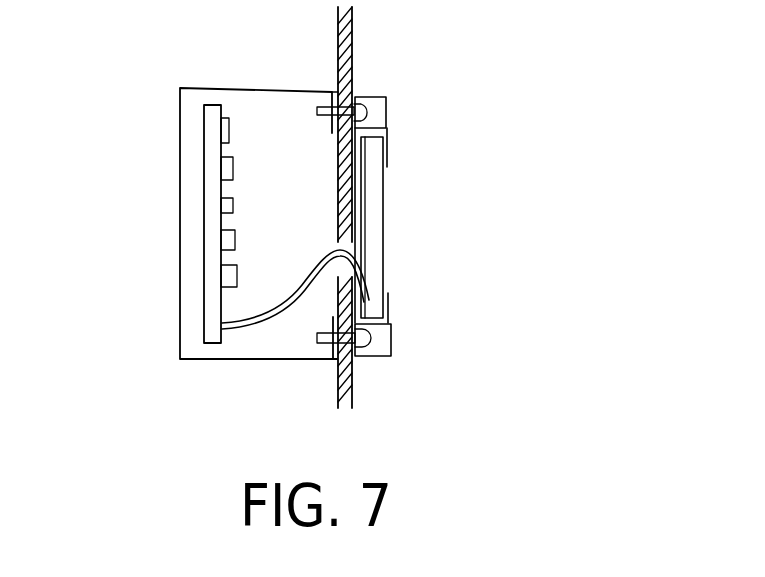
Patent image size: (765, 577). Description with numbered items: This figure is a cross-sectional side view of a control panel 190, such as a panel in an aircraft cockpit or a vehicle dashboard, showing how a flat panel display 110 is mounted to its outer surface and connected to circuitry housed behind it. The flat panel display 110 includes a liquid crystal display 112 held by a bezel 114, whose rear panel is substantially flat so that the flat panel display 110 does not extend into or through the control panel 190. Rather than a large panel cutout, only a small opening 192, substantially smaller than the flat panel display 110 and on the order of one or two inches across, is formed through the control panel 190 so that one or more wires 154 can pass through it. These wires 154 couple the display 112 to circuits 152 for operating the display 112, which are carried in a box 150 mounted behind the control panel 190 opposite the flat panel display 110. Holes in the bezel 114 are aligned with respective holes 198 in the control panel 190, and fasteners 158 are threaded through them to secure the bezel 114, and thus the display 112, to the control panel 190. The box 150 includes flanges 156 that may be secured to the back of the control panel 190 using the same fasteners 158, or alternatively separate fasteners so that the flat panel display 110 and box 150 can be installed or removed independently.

The flat panel display 110 is at (454, 227).
The liquid crystal display 112 is at (395, 186).
The bezel 114 is at (397, 370).
The box 150 is at (198, 369).
The circuits 152 is at (217, 244).
The wires 154 is at (272, 322).
The flanges 156 is at (333, 112).
The fasteners 158 is at (369, 102).
The control panel 190 is at (324, 26).
The opening 192 is at (337, 242).
The holes 198 is at (338, 88).